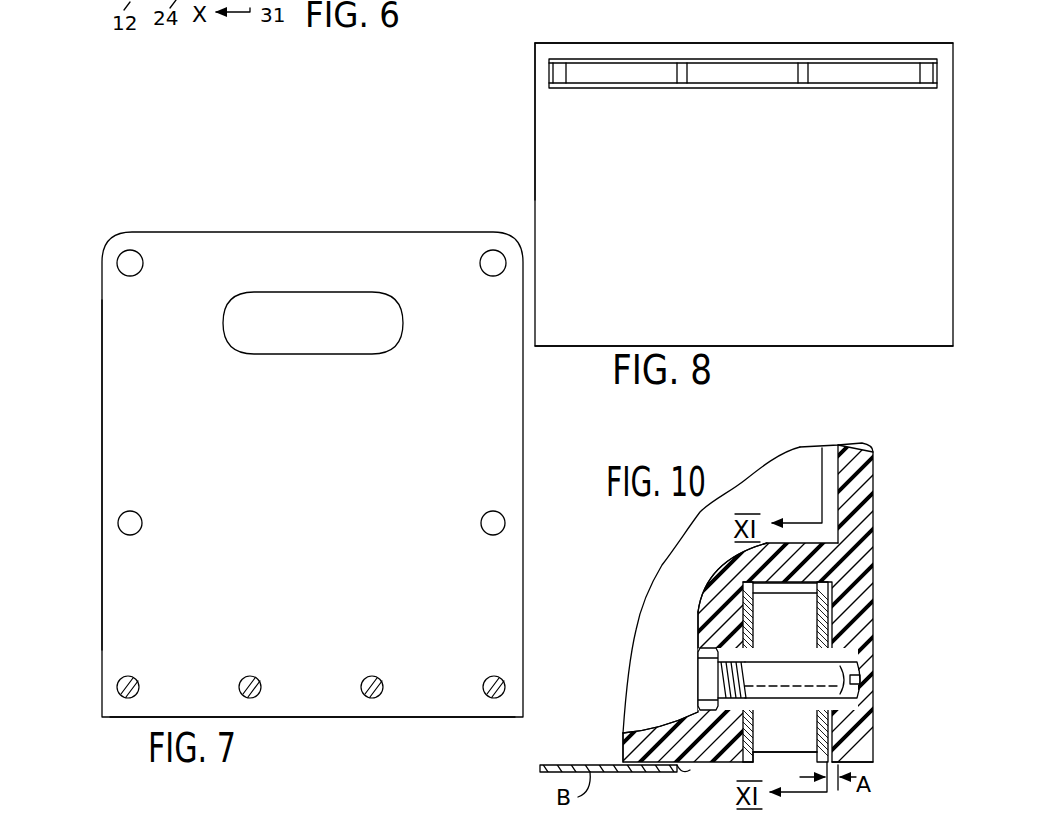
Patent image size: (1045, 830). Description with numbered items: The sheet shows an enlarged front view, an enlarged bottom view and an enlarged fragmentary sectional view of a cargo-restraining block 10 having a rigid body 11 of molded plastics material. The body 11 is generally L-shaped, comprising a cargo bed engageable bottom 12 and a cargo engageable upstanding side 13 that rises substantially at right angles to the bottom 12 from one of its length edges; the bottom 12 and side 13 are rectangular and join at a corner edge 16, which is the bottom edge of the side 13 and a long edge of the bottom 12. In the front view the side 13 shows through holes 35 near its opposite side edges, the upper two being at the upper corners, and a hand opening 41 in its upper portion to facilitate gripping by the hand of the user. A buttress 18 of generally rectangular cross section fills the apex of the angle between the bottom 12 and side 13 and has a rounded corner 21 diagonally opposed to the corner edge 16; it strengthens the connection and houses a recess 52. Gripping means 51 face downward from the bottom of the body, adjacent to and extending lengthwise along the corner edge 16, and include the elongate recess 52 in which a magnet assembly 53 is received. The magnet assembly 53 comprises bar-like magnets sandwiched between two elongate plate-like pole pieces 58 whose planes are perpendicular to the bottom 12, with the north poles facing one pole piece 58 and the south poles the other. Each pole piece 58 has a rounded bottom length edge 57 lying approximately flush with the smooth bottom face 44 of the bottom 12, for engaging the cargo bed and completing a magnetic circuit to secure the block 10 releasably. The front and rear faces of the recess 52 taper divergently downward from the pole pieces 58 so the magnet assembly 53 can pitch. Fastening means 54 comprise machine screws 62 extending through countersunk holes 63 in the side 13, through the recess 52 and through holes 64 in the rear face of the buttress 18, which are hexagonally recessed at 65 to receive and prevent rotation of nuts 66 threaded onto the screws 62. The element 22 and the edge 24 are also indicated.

In FIG. 7, the block 10 is at (220, 228).
In FIG. 8, the block 10 is at (513, 107).
In FIG. 10, the block 10 is at (783, 445).
In FIG. 10, the rigid body 11 is at (618, 717).
In FIG. 8, the cargo bed engageable bottom 12 is at (563, 157).
In FIG. 10, the cargo bed engageable bottom 12 is at (630, 752).
In FIG. 7, the cargo engageable upstanding side 13 is at (138, 445).
In FIG. 10, the cargo engageable upstanding side 13 is at (872, 452).
In FIG. 7, the corner edge 16 is at (393, 718).
In FIG. 8, the corner edge 16 is at (850, 43).
In FIG. 10, the corner edge 16 is at (873, 762).
In FIG. 10, the buttress 18 is at (698, 618).
In FIG. 10, the rounded corner 21 is at (723, 555).
In FIG. 10, the upper surface 22 is at (768, 480).
In FIG. 8, the bottom edge 24 is at (867, 348).
In FIG. 7, the through holes 35 is at (121, 258).
In FIG. 7, the hand opening 41 is at (290, 295).
In FIG. 10, the bottom face 44 is at (690, 762).
In FIG. 8, the gripping means 51 is at (540, 71).
In FIG. 10, the gripping means 51 is at (801, 588).
In FIG. 8, the elongate recess 52 is at (592, 66).
In FIG. 10, the elongate recess 52 is at (747, 762).
In FIG. 8, the magnet assembly 53 is at (618, 92).
In FIG. 10, the magnet assembly 53 is at (801, 757).
In FIG. 10, the fastening means 54 is at (883, 650).
In FIG. 10, the bottom length edge 57 is at (752, 762).
In FIG. 10, the pole pieces 58 is at (745, 628).
In FIG. 10, the machine screws 62 is at (863, 688).
In FIG. 10, the countersunk holes 63 is at (855, 673).
In FIG. 10, the holes 64 is at (718, 640).
In FIG. 10, the hexagonal recess 65 is at (690, 697).
In FIG. 10, the nuts 66 is at (708, 678).